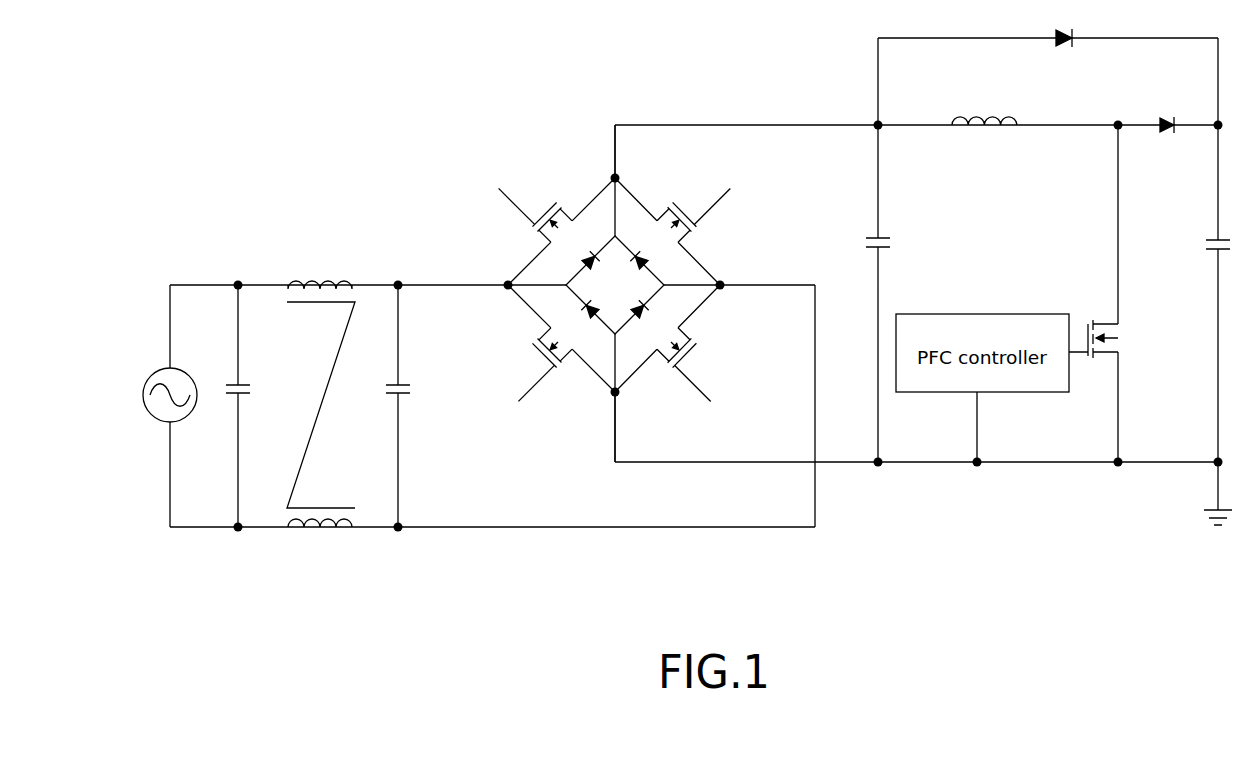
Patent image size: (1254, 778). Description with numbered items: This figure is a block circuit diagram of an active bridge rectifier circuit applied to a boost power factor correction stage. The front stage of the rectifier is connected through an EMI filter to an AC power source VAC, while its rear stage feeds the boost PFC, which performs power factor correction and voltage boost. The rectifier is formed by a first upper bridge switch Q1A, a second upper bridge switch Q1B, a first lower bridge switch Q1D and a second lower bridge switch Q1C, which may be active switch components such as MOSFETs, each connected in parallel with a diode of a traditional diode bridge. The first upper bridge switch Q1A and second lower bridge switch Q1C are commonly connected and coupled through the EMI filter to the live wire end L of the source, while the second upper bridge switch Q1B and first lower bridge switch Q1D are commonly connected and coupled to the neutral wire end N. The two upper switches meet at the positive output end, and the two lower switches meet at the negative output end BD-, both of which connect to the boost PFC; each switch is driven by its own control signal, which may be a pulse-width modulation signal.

The first upper bridge switch Q1A is at (561, 229).
The second upper bridge switch Q1B is at (667, 229).
The second lower bridge switch Q1C is at (547, 338).
The first lower bridge switch Q1D is at (678, 338).
The live wire end L is at (487, 275).
The neutral wire end N is at (738, 275).
The negative output end BD- is at (610, 443).
The AC power source VAC is at (150, 395).